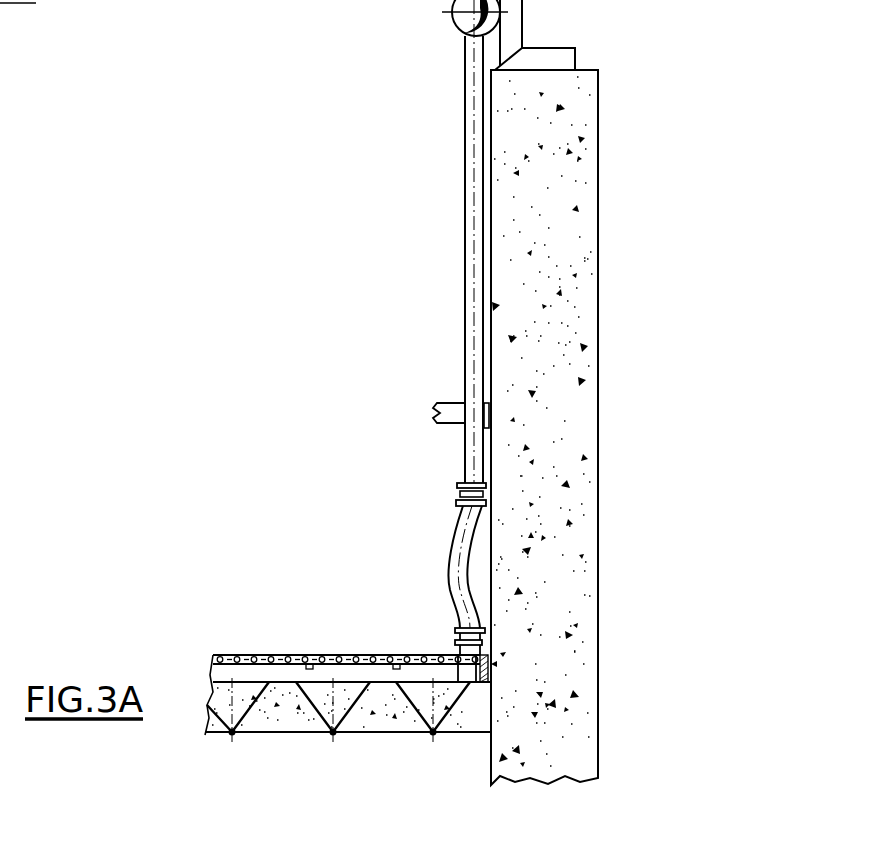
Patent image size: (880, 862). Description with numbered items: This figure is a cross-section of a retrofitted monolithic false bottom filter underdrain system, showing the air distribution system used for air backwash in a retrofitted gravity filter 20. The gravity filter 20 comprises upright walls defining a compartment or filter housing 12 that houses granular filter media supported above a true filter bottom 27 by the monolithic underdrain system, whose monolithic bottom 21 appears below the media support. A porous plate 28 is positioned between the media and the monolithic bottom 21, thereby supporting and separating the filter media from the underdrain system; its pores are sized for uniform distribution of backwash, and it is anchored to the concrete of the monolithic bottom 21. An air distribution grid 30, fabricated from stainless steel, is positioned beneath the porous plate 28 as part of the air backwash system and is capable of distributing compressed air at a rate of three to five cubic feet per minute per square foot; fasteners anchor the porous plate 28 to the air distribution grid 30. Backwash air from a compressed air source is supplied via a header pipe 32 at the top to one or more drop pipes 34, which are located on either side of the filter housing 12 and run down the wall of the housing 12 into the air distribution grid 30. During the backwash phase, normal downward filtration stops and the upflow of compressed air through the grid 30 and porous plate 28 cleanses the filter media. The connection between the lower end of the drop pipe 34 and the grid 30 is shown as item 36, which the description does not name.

The filter housing 12 is at (617, 216).
The gravity filter 20 is at (297, 260).
The monolithic bottom 21 is at (372, 735).
The true filter bottom 27 is at (591, 35).
The porous plate 28 is at (252, 654).
The air distribution grid 30 is at (485, 671).
The header pipe 32 is at (451, 20).
The drop pipe 34 is at (464, 355).
The flexible hose 36 is at (449, 567).